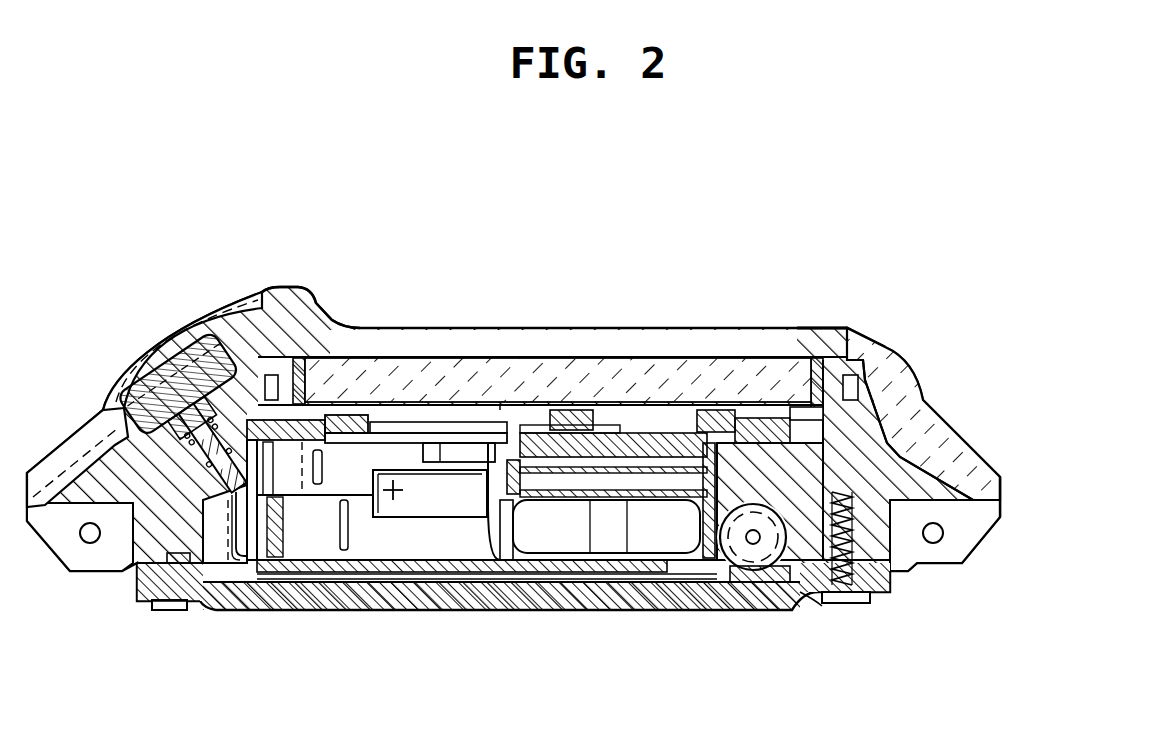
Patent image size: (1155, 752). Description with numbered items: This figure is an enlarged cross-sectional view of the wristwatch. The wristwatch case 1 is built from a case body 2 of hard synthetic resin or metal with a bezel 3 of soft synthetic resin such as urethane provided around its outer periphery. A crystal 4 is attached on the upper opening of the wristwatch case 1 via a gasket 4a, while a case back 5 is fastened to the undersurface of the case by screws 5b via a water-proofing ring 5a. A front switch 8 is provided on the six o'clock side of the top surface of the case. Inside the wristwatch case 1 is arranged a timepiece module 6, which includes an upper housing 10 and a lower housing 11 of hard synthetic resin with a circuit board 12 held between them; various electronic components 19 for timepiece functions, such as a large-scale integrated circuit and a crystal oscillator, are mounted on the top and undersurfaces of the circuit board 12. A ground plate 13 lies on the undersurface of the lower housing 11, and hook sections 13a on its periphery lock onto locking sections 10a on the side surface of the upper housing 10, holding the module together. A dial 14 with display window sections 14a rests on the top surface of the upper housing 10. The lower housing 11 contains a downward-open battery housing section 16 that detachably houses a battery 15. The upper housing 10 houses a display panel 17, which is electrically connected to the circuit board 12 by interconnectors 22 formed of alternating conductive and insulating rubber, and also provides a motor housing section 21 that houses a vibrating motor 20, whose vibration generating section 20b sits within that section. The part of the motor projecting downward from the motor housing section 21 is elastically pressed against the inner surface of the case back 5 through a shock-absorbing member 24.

The wristwatch case 1 is at (980, 318).
The case body 2 is at (863, 402).
The bezel 3 is at (890, 353).
The crystal 4 is at (516, 382).
The gasket 4a is at (280, 328).
The case back 5 is at (373, 610).
The water-proofing ring 5a is at (135, 578).
The screws 5b is at (167, 610).
The timepiece module 6 is at (367, 540).
The front switch 8 is at (158, 345).
The upper housing 10 is at (753, 463).
The locking sections 10a is at (492, 405).
The lower housing 11 is at (277, 612).
The circuit board 12 is at (603, 580).
The ground plate 13 is at (432, 570).
The hook sections 13a is at (512, 500).
The dial 14 is at (343, 422).
The display window sections 14a is at (426, 422).
The battery 15 is at (552, 535).
The battery housing section 16 is at (695, 520).
The display panel 17 is at (607, 408).
The electronic components 19 is at (623, 480).
The vibrating motor 20 is at (745, 555).
The vibration generating section 20b is at (813, 612).
The motor housing section 21 is at (795, 490).
The interconnectors 22 is at (697, 407).
The shock-absorbing member 24 is at (770, 583).